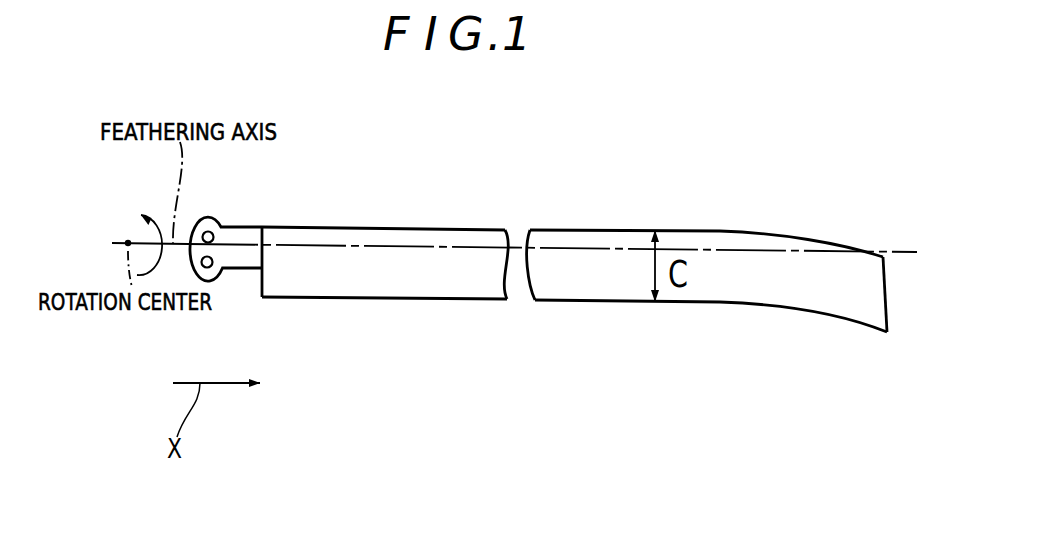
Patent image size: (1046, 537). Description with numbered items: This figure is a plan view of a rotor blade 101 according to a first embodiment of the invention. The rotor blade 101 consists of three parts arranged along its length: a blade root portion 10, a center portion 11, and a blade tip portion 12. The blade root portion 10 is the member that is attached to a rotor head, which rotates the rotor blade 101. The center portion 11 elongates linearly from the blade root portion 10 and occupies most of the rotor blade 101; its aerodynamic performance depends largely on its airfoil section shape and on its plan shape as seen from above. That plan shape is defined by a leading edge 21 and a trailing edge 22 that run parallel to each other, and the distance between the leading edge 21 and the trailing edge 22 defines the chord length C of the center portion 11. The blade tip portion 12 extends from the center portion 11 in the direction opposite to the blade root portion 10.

The rotor blade 101 is at (636, 157).
The blade root portion 10 is at (222, 272).
The center portion 11 is at (325, 283).
The leading edge 21 is at (354, 227).
The trailing edge 22 is at (414, 301).
The blade tip portion 12 is at (870, 313).